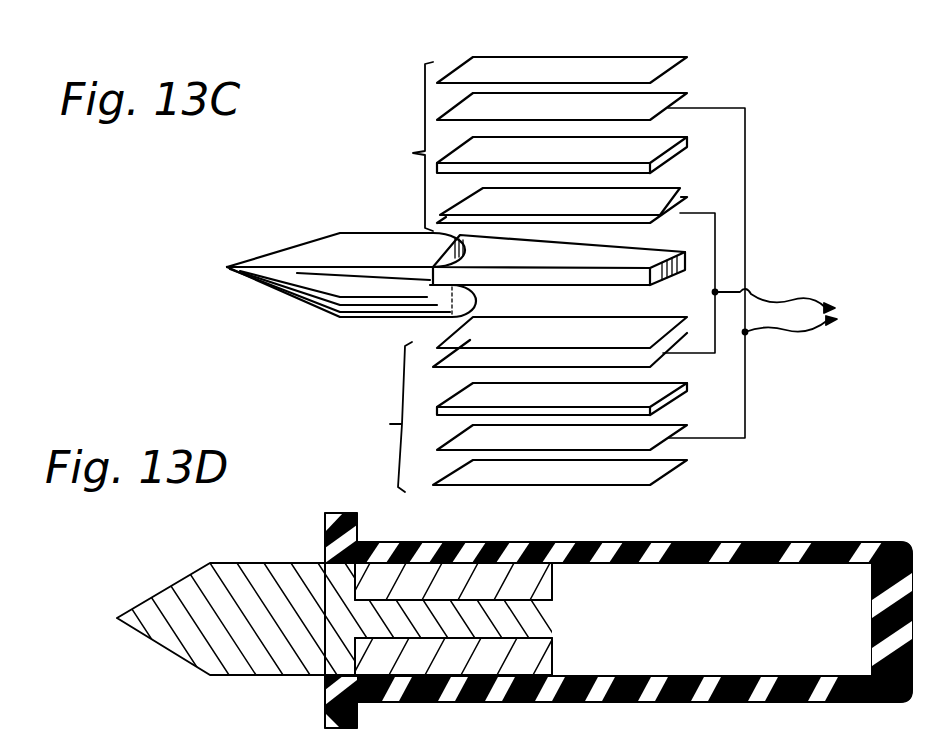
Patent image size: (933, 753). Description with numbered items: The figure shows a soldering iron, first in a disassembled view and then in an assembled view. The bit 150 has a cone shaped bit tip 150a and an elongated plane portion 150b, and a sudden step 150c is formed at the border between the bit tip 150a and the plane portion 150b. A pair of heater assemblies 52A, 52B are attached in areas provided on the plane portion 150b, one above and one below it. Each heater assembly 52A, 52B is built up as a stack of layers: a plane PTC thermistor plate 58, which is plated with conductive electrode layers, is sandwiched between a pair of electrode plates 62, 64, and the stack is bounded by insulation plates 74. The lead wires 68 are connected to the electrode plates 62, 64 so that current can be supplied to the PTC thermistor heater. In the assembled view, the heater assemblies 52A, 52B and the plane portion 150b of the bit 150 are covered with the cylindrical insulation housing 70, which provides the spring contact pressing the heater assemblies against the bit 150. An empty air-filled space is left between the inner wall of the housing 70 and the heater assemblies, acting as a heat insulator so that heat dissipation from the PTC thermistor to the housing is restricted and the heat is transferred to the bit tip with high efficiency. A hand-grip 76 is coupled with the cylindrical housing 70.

In FIG. 13C, the heater assembly 52A is at (527, 144).
In FIG. 13D, the heater assembly 52A is at (438, 580).
In FIG. 13C, the heater assembly 52B is at (513, 404).
In FIG. 13D, the heater assembly 52B is at (442, 668).
In FIG. 13C, the plane PTC thermistor plate 58 is at (688, 140).
In FIG. 13C, the electrode plate 62 is at (683, 190).
In FIG. 13C, the electrode plate 64 is at (690, 93).
In FIG. 13C, the lead wires 68 is at (800, 330).
In FIG. 13D, the cylindrical insulation housing 70 is at (560, 553).
In FIG. 13C, the insulation plate 74 is at (672, 55).
In FIG. 13D, the hand-grip 76 is at (807, 553).
In FIG. 13C, the bit 150 is at (370, 238).
In FIG. 13D, the bit 150 is at (262, 577).
In FIG. 13C, the bit tip 150a is at (313, 248).
In FIG. 13C, the plane portion 150b is at (558, 277).
In FIG. 13C, the sudden step 150c is at (447, 318).